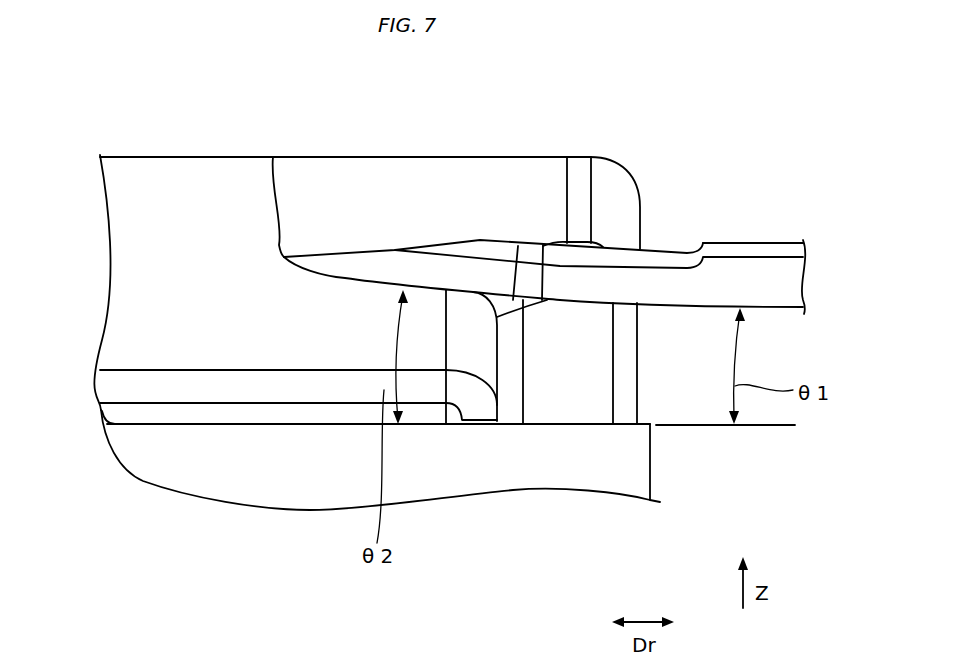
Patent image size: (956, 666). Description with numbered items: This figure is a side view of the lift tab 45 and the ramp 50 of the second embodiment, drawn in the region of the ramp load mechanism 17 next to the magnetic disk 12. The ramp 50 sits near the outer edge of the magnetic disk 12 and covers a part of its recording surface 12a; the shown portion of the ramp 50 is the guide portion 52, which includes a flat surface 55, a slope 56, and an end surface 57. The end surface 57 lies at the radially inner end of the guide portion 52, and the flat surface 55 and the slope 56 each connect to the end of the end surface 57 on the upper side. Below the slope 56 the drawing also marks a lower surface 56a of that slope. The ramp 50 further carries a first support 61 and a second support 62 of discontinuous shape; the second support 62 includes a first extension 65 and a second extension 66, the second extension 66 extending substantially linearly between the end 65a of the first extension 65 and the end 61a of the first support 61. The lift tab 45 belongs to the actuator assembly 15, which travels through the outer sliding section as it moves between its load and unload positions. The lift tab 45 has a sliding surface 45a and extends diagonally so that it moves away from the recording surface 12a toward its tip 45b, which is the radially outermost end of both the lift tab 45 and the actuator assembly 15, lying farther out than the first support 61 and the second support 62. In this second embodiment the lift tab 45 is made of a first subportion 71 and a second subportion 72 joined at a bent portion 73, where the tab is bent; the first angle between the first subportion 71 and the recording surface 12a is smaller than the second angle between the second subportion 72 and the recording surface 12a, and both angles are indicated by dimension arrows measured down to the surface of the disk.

The ramp load mechanism 17 is at (334, 245).
The ramp 50 is at (126, 150).
The tip 45b is at (273, 157).
The guide portion 52 is at (308, 253).
The slope 56 is at (358, 177).
The flat surface 55 is at (483, 153).
The bent portion 73 is at (527, 273).
The end of the first support 61a is at (589, 240).
The first support 61 is at (617, 200).
The lift tab 45 is at (556, 271).
The sliding surface 45a is at (758, 311).
The actuator assembly 15 is at (783, 237).
The first subportion 71 is at (626, 305).
The second extension 66 is at (540, 301).
The end surface 57 is at (640, 380).
The recording surface 12a is at (102, 410).
The magnetic disk 12 is at (253, 480).
The lower surface of wall 56a is at (337, 407).
The second subportion 72 is at (463, 292).
The second support 62 is at (536, 430).
The first extension 65 is at (536, 419).
The end of the first extension 65a is at (510, 314).